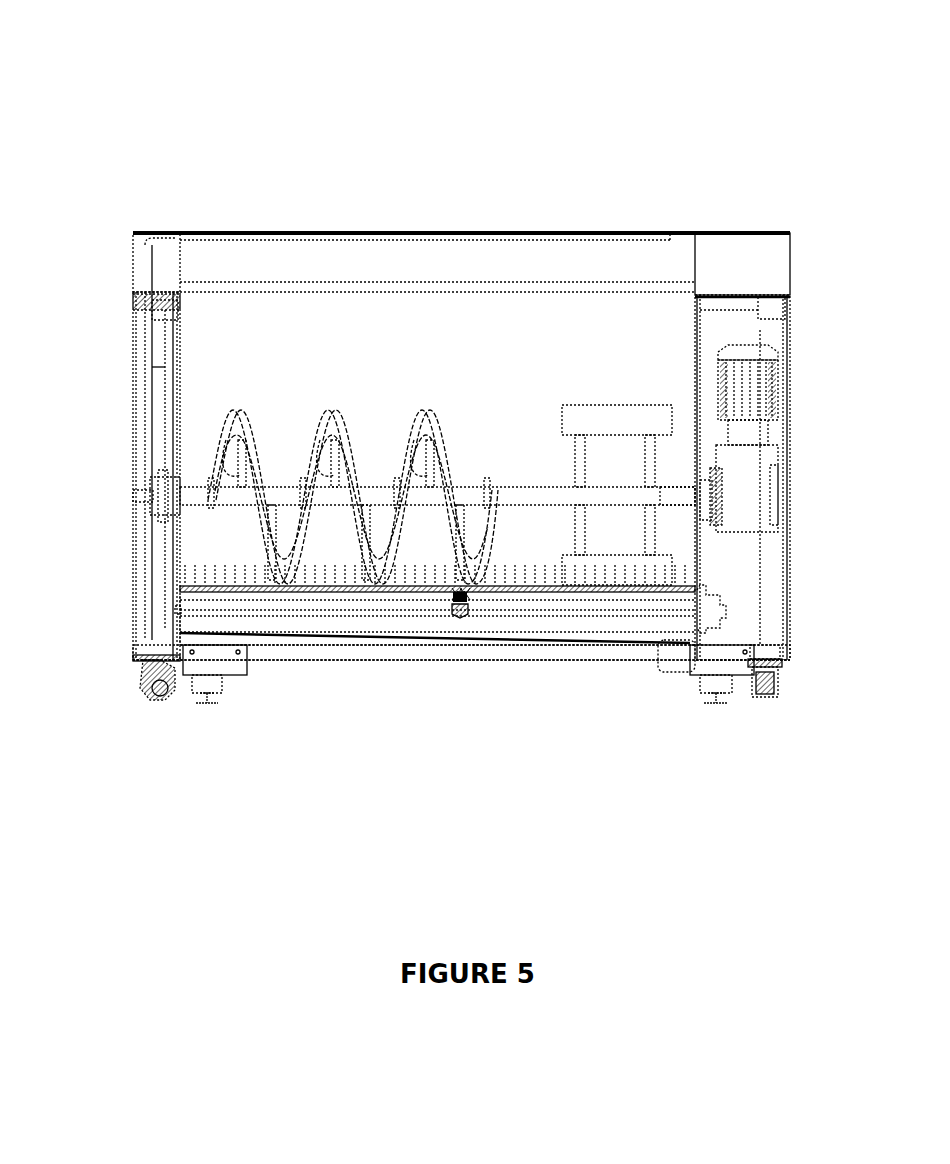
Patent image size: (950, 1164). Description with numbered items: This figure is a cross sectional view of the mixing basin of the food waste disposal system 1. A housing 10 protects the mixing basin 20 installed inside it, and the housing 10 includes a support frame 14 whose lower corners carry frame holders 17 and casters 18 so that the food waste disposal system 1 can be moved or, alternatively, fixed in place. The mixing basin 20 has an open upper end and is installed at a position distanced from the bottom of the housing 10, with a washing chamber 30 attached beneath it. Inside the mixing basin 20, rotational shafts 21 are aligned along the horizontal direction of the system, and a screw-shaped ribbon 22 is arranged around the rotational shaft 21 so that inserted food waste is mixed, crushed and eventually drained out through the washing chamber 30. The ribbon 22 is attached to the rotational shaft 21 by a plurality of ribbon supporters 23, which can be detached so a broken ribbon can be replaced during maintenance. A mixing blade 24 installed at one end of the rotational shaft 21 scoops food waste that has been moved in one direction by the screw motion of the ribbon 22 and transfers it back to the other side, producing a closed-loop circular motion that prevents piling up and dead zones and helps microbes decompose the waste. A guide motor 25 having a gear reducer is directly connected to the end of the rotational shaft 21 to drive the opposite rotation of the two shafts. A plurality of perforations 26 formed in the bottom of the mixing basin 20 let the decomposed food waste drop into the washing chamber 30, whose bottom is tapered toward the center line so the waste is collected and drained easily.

The food waste disposal system 1 is at (114, 140).
The housing 10 is at (715, 233).
The support frame 14 is at (345, 652).
The frame holder 17 is at (230, 670).
The caster 18 is at (767, 695).
The mixing basin 20 is at (283, 330).
The rotational shaft 21 is at (527, 490).
The screw-shaped ribbon 22 is at (330, 428).
The ribbon supporter 23 is at (428, 470).
The mixing blade 24 is at (614, 428).
The guide motor 25 is at (758, 478).
The perforation 26 is at (235, 568).
The washing chamber 30 is at (590, 628).